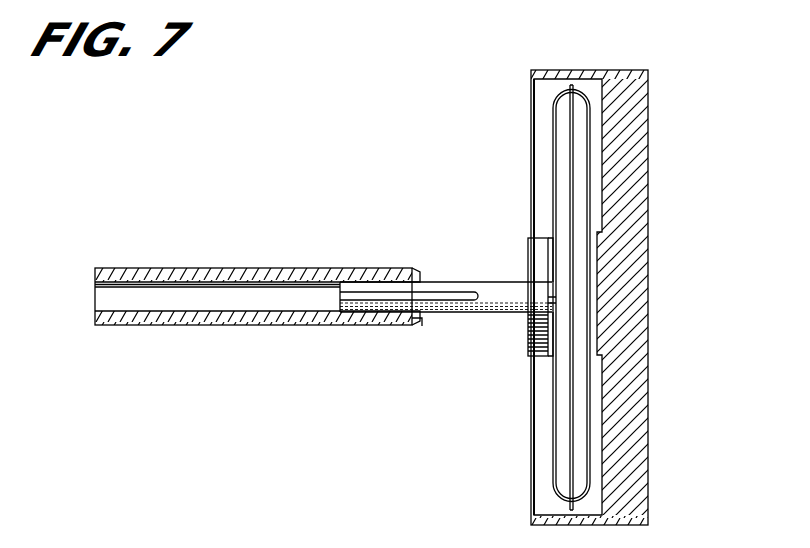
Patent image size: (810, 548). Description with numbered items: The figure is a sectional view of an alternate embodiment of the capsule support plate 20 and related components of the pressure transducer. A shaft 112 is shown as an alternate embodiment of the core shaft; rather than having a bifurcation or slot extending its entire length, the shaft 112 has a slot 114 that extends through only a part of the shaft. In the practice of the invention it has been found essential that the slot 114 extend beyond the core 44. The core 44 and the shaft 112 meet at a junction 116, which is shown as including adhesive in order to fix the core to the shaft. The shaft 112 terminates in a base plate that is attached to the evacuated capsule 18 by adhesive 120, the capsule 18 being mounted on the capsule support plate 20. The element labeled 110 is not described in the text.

The evacuated capsule 18 is at (553, 112).
The capsule support plate 20 is at (622, 131).
The core 44 is at (130, 268).
The threaded boss 110 is at (528, 345).
The shaft 112 is at (453, 282).
The slot 114 is at (470, 300).
The junction 116 is at (423, 323).
The adhesive 120 is at (552, 298).